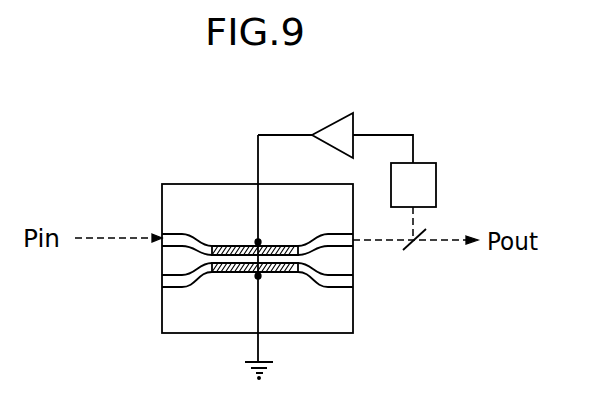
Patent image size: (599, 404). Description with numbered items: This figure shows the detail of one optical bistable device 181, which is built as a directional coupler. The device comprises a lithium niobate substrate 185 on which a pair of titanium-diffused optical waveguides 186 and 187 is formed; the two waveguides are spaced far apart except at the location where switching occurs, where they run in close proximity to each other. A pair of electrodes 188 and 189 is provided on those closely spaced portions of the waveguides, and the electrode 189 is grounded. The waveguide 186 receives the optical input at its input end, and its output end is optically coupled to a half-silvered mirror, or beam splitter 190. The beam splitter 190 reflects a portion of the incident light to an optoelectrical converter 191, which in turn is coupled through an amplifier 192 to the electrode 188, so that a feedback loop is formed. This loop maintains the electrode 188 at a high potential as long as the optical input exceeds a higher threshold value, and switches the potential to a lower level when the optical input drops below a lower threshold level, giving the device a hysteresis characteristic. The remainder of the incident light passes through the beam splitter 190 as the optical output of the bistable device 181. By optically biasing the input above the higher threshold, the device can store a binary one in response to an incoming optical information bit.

The optical bistable device 181 is at (173, 168).
The LiNbO3 substrate 185 is at (354, 322).
The optical waveguide 186 is at (178, 236).
The optical waveguide 187 is at (165, 278).
The electrode 188 is at (273, 246).
The electrode 189 is at (278, 272).
The beam splitter 190 is at (406, 252).
The optoelectrical converter 191 is at (437, 180).
The amplifier 192 is at (355, 123).